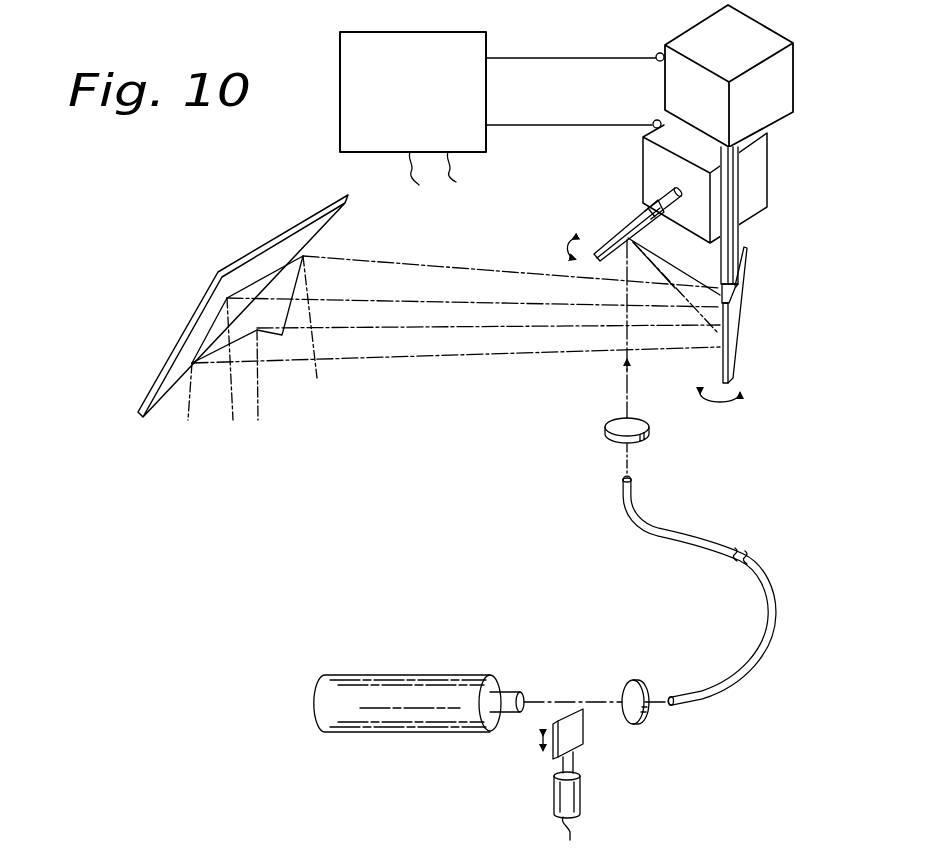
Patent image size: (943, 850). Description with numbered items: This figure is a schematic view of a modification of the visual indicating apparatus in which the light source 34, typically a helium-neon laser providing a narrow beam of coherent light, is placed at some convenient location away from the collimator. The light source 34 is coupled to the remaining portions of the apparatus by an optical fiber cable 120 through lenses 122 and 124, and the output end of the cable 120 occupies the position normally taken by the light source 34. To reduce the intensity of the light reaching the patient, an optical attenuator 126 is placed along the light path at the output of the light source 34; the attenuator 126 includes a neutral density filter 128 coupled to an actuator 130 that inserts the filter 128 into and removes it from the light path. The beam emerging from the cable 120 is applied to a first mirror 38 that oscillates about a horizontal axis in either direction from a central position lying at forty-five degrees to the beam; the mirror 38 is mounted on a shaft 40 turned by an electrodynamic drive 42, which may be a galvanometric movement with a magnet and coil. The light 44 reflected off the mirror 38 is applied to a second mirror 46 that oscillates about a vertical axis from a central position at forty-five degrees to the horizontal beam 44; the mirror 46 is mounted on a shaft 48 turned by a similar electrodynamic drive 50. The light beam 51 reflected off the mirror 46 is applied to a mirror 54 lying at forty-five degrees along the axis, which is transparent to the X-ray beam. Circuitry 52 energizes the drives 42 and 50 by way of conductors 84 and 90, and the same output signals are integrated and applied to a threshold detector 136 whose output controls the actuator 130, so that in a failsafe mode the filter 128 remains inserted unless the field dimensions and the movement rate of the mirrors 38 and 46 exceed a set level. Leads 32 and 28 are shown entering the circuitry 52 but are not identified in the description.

The circuitry 52 is at (433, 31).
The conductor 84 is at (528, 58).
The conductor 90 is at (538, 124).
The input line 32 is at (427, 176).
The input line 28 is at (456, 182).
The electrodynamic drive 50 is at (692, 33).
The shaft 48 is at (735, 177).
The electrodynamic drive 42 is at (755, 205).
The shaft 40 is at (667, 192).
The first mirror 38 is at (622, 222).
The reflected light 44 is at (687, 279).
The second mirror 46 is at (738, 355).
The mirror 54 is at (337, 225).
The light beam 51 is at (432, 357).
The threshold detector 136 is at (627, 402).
The lens 124 is at (617, 442).
The optical fiber cable 120 is at (733, 683).
The lens 122 is at (633, 678).
The light source 34 is at (440, 675).
The neutral density filter 128 is at (583, 744).
The optical attenuator 126 is at (559, 774).
The actuator 130 is at (573, 800).